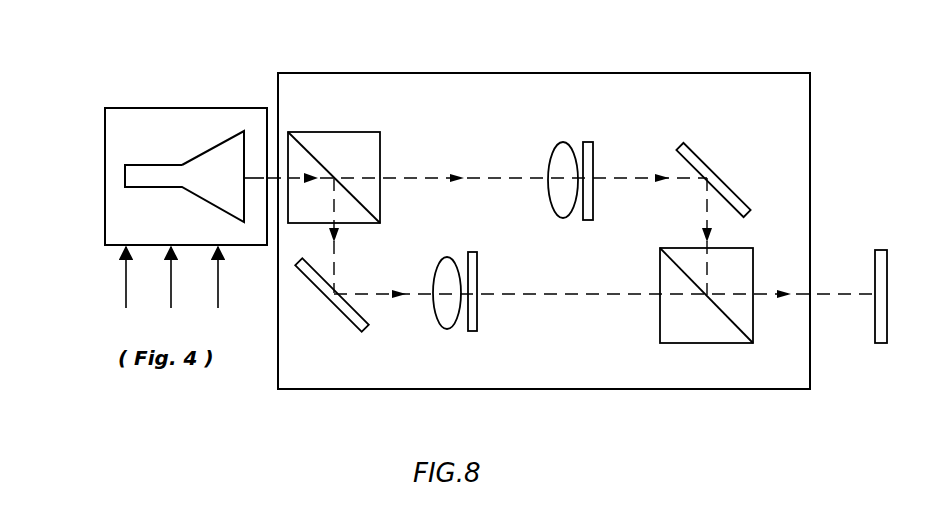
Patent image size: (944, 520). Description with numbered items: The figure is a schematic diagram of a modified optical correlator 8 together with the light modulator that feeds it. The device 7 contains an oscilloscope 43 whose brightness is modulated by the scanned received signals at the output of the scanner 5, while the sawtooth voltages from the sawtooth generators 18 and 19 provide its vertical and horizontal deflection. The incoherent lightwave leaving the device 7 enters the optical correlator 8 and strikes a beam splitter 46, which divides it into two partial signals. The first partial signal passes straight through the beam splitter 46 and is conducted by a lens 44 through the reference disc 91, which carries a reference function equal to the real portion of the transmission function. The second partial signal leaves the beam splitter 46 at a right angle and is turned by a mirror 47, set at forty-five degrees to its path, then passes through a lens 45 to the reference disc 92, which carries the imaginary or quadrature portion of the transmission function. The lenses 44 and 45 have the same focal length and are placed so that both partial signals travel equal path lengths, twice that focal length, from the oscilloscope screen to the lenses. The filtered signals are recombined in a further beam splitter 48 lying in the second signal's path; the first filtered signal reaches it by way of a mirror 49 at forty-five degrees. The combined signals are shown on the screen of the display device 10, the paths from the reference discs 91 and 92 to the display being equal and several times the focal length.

The device 7 is at (150, 117).
The oscilloscope 43 is at (163, 178).
The scanner 5 is at (125, 294).
The sawtooth generator 18 is at (171, 294).
The sawtooth generator 19 is at (218, 294).
The optical correlator 8 is at (797, 150).
The beam splitter 46 is at (322, 138).
The lens 44 is at (560, 152).
The reference disc 91 is at (590, 150).
The mirror 49 is at (722, 188).
The beam splitter 48 is at (748, 280).
The display device 10 is at (878, 270).
The mirror 47 is at (332, 300).
The lens 45 is at (448, 262).
The reference disc 92 is at (473, 272).